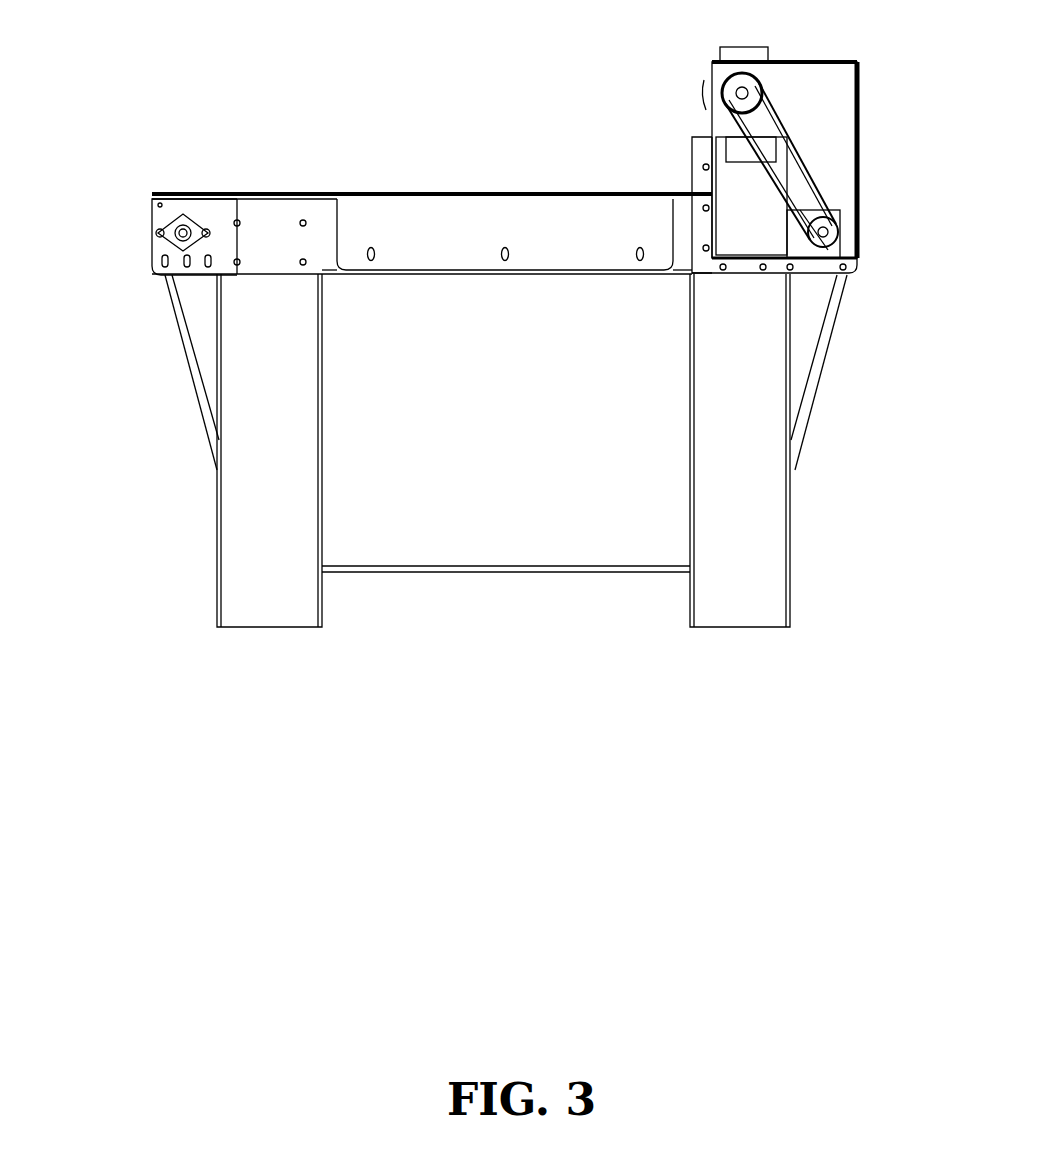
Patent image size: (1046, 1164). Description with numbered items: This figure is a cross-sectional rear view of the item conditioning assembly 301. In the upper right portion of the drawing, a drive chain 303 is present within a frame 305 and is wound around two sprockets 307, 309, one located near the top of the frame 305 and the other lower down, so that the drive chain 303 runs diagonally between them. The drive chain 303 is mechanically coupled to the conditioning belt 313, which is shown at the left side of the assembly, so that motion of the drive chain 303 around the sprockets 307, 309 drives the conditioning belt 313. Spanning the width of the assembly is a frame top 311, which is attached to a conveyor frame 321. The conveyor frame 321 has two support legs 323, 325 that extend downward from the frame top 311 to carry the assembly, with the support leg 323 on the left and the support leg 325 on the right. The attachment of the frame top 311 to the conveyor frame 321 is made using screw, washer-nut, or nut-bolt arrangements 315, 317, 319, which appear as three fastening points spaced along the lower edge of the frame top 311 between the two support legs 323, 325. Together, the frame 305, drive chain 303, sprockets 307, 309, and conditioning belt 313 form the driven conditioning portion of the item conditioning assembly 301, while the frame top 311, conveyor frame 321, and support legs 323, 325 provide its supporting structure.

The item conditioning assembly 301 is at (102, 121).
The drive chain 303 is at (810, 154).
The frame 305 is at (861, 240).
The sprocket 307 is at (748, 88).
The sprocket 309 is at (834, 227).
The frame top 311 is at (488, 190).
The conditioning belt 313 is at (183, 368).
The nut-bolt arrangement 315 is at (371, 262).
The nut-bolt arrangement 317 is at (505, 262).
The nut-bolt arrangement 319 is at (640, 262).
The conveyor frame 321 is at (793, 510).
The support leg 323 is at (269, 605).
The support leg 325 is at (741, 605).